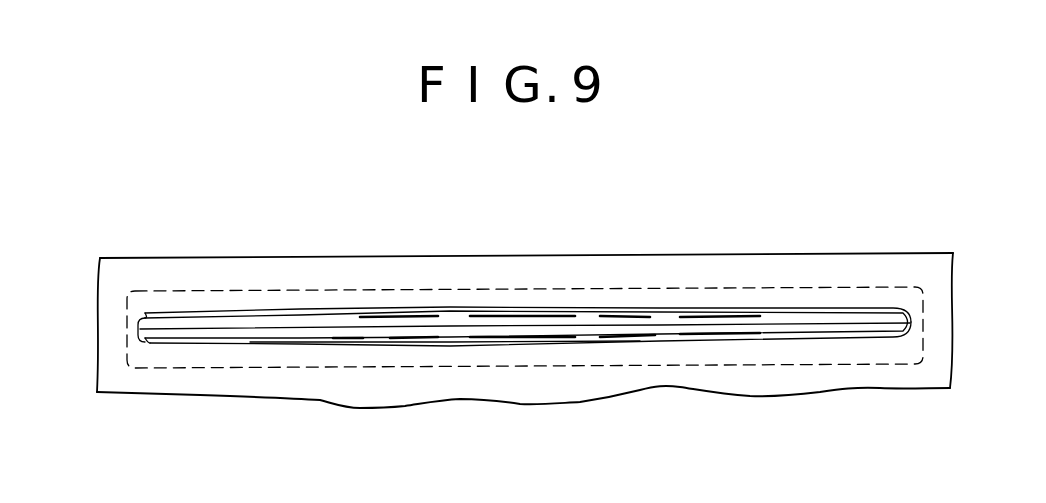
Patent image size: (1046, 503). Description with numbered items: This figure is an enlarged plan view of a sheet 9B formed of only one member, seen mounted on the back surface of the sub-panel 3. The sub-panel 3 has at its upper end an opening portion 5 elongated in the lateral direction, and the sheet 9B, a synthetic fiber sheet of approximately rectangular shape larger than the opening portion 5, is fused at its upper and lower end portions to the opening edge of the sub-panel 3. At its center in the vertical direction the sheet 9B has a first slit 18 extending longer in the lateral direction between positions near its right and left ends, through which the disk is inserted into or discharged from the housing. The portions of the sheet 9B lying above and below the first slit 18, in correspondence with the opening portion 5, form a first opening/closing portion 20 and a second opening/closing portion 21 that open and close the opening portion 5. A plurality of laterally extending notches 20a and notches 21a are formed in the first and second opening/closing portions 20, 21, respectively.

The sub-panel 3 is at (538, 255).
The opening portion 5 is at (222, 330).
The sheet 9B is at (586, 320).
The first slit 18 is at (665, 327).
The first opening/closing portion 20 is at (458, 322).
The notches 20a is at (358, 318).
The second opening/closing portion 21 is at (455, 330).
The notches 21a is at (353, 340).